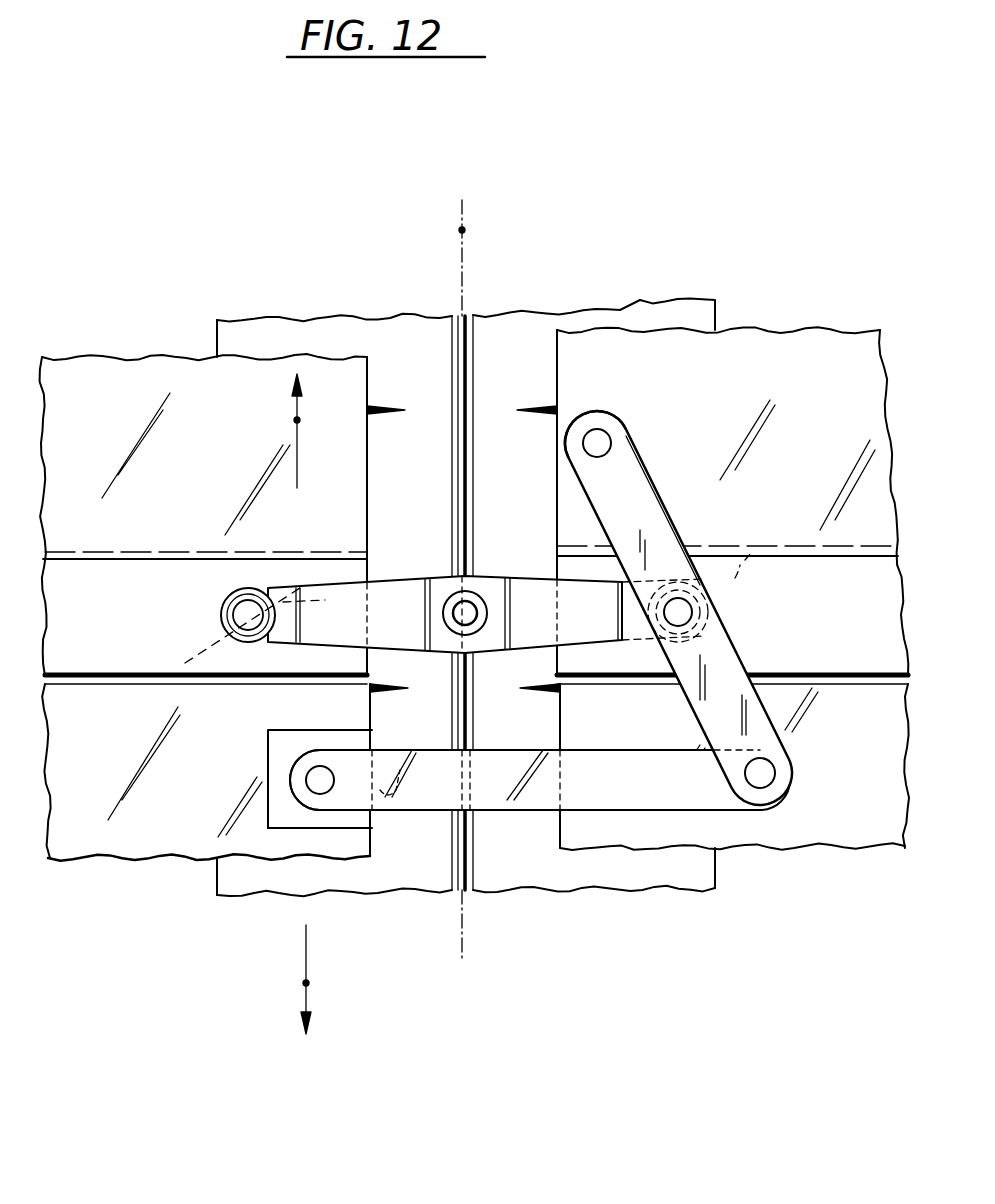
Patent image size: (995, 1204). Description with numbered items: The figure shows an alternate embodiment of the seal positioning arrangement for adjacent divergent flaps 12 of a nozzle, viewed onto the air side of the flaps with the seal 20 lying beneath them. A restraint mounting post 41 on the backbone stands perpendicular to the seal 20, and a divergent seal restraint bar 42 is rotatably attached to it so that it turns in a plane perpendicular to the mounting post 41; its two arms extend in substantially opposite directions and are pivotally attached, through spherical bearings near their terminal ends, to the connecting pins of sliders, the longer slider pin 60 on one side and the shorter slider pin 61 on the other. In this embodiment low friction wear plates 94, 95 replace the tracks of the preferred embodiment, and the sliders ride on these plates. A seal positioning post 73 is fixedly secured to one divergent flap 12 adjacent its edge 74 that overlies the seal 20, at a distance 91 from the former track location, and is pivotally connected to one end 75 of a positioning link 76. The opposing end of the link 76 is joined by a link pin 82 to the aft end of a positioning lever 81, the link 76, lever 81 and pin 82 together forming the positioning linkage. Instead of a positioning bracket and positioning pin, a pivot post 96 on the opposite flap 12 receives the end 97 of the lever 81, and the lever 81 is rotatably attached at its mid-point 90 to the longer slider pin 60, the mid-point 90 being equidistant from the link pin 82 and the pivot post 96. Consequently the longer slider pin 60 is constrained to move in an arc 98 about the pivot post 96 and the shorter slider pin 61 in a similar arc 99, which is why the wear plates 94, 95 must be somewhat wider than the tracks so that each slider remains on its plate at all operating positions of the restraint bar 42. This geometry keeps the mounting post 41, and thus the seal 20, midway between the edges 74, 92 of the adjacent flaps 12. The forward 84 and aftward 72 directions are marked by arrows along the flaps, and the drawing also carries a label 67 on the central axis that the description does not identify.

The divergent flaps 12 is at (118, 743).
The seal 20 is at (436, 861).
The restraint mounting post 41 is at (467, 608).
The divergent seal restraint bar 42 is at (390, 600).
The longer slider pin 60 is at (700, 605).
The shorter slider pin 61 is at (247, 588).
The central axis 67 is at (468, 226).
The aftward direction 72 is at (304, 984).
The seal positioning post 73 is at (300, 790).
The edge 74 is at (466, 585).
The end of positioning link 75 is at (310, 783).
The positioning link 76 is at (535, 800).
The positioning lever 81 is at (640, 495).
The link pin 82 is at (765, 778).
The forward direction 84 is at (295, 421).
The mid-point of the lever 90 is at (710, 625).
The distance 91 is at (397, 757).
The edge 92 is at (557, 372).
The low friction wear plate 94 is at (836, 580).
The low friction wear plate 95 is at (108, 570).
The pivot post 96 is at (600, 442).
The end of the lever 97 is at (605, 414).
The arc 98 is at (733, 576).
The arc 99 is at (206, 645).